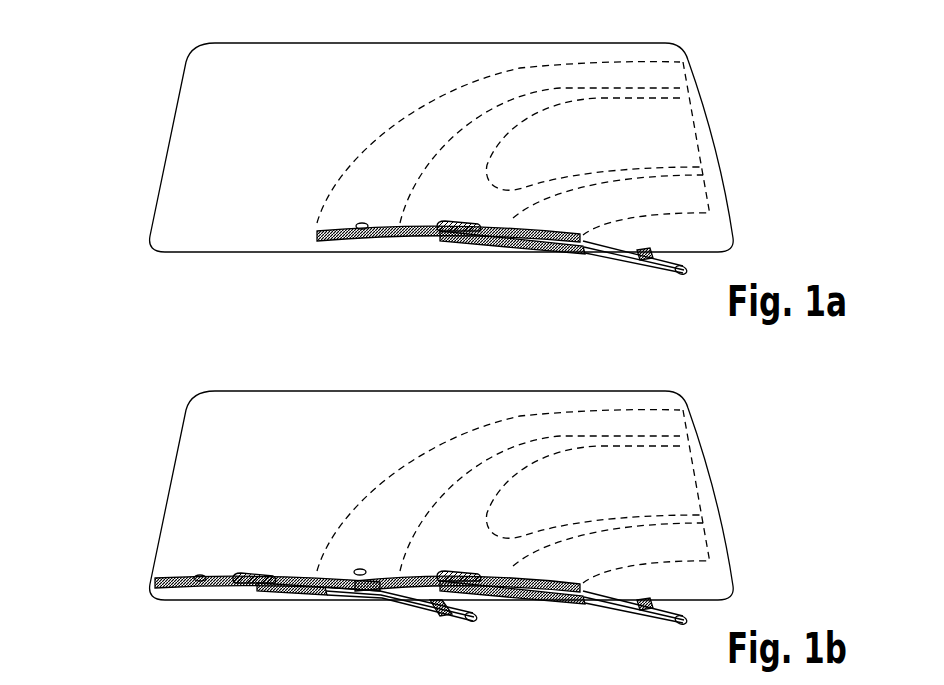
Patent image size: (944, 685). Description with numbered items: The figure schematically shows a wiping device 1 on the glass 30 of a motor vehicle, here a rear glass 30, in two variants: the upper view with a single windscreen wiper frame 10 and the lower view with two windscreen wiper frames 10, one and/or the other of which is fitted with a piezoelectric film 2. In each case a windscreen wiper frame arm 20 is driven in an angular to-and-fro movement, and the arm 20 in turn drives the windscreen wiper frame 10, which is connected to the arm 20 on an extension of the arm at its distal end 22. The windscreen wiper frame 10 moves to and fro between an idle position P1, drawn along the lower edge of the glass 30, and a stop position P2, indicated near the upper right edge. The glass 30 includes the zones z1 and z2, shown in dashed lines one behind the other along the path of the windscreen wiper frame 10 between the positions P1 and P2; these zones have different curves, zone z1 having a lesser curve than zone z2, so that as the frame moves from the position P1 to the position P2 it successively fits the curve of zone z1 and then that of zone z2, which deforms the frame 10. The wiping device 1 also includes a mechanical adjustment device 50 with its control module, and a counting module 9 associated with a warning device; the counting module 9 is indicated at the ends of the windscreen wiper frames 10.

In FIG. 1a, the wiping device 1 is at (650, 267).
In FIG. 1b, the wiping device 1 is at (425, 612).
In FIG. 1a, the piezoelectric film 2 is at (417, 246).
In FIG. 1b, the piezoelectric film 2 is at (275, 591).
In FIG. 1a, the counting module 9 is at (362, 220).
In FIG. 1b, the counting module 9 is at (199, 573).
In FIG. 1a, the windscreen wiper frame 10 is at (392, 246).
In FIG. 1b, the windscreen wiper frame 10 is at (190, 595).
In FIG. 1a, the windscreen wiper frame arm 20 is at (625, 248).
In FIG. 1b, the windscreen wiper frame arm 20 is at (591, 595).
In FIG. 1a, the distal end 22 is at (447, 241).
In FIG. 1b, the distal end 22 is at (253, 588).
In FIG. 1a, the glass 30 is at (227, 115).
In FIG. 1b, the glass 30 is at (272, 460).
In FIG. 1a, the mechanical adjustment device 50 is at (673, 270).
In FIG. 1b, the mechanical adjustment device 50 is at (442, 614).
In FIG. 1a, the idle position P1 is at (348, 250).
In FIG. 1b, the idle position P1 is at (152, 599).
In FIG. 1a, the stop position P2 is at (693, 73).
In FIG. 1b, the stop position P2 is at (698, 458).
In FIG. 1a, the zone z1 is at (458, 196).
In FIG. 1b, the zone z1 is at (450, 538).
In FIG. 1a, the zone z2 is at (647, 133).
In FIG. 1b, the zone z2 is at (585, 478).